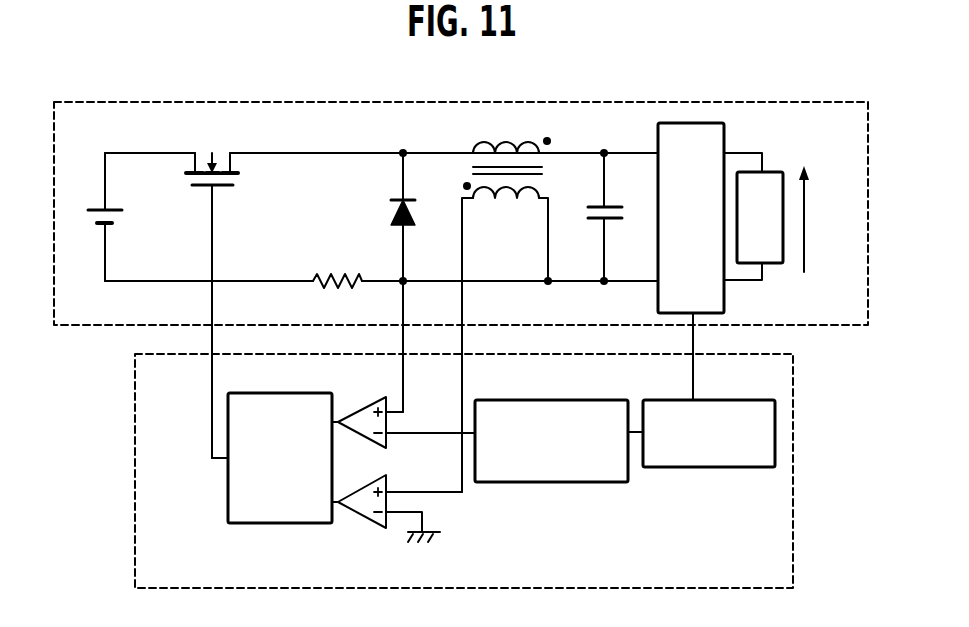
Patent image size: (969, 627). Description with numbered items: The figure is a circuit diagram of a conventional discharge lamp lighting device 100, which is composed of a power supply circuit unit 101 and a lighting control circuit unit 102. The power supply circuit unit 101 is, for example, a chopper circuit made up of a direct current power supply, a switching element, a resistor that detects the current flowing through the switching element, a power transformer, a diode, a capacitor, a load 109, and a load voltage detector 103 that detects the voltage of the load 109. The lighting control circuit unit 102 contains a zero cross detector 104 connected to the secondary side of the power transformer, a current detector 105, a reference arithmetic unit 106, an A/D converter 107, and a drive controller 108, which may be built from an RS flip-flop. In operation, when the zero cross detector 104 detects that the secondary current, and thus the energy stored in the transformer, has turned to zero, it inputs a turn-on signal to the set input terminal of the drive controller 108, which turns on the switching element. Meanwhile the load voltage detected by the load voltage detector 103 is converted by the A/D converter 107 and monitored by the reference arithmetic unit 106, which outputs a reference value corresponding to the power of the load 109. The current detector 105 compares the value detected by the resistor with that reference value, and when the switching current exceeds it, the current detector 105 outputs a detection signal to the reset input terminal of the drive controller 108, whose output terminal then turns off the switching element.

The discharge lamp lighting device 100 is at (805, 373).
The power supply circuit unit 101 is at (225, 100).
The lighting control circuit unit 102 is at (135, 452).
The load voltage detector 103 is at (690, 123).
The zero cross detector 104 is at (365, 519).
The current detector 105 is at (397, 420).
The reference arithmetic unit 106 is at (545, 482).
The A/D converter 107 is at (697, 467).
The drive controller 108 is at (228, 503).
The load 109 is at (775, 172).